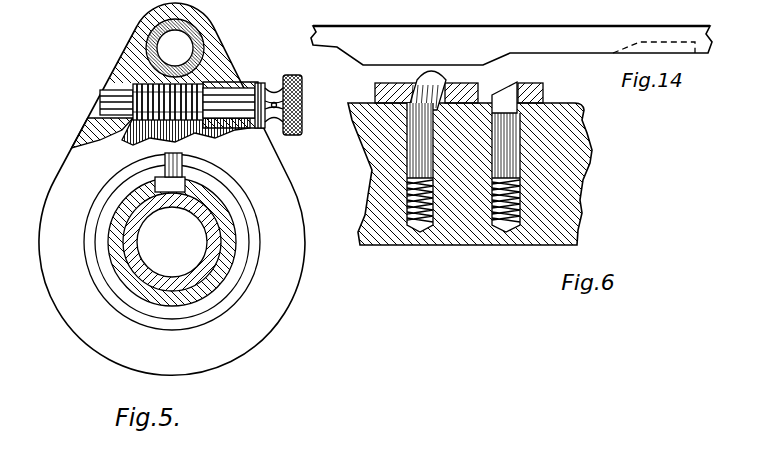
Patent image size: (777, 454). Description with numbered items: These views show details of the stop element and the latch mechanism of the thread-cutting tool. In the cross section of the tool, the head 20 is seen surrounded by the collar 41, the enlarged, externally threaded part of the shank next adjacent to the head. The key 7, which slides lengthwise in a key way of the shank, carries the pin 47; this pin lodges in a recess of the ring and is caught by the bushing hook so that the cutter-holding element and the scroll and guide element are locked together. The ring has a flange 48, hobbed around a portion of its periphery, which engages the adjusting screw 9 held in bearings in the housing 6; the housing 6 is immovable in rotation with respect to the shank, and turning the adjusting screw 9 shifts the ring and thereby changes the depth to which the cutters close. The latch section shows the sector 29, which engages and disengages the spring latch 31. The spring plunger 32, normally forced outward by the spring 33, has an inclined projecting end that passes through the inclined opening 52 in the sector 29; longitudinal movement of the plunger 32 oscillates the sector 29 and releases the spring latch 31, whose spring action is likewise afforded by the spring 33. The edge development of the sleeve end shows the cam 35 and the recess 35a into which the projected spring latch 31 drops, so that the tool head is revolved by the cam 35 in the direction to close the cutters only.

In FIG. 5, the housing 6 is at (232, 63).
In FIG. 5, the adjusting screw 9 is at (266, 92).
In FIG. 5, the flange 48 is at (92, 135).
In FIG. 5, the pin 47 is at (178, 158).
In FIG. 5, the key 7 is at (183, 182).
In FIG. 5, the collar 41 is at (228, 220).
In FIG. 5, the head 20 is at (207, 255).
In FIG. 6, the sector 29 is at (543, 93).
In FIG. 6, the inclined opening 52 is at (450, 82).
In FIG. 6, the spring latch 31 is at (515, 137).
In FIG. 6, the spring plunger 32 is at (410, 162).
In FIG. 6, the spring 33 is at (420, 230).
In FIG. 14, the cam 35 is at (590, 55).
In FIG. 14, the recess 35a is at (680, 57).